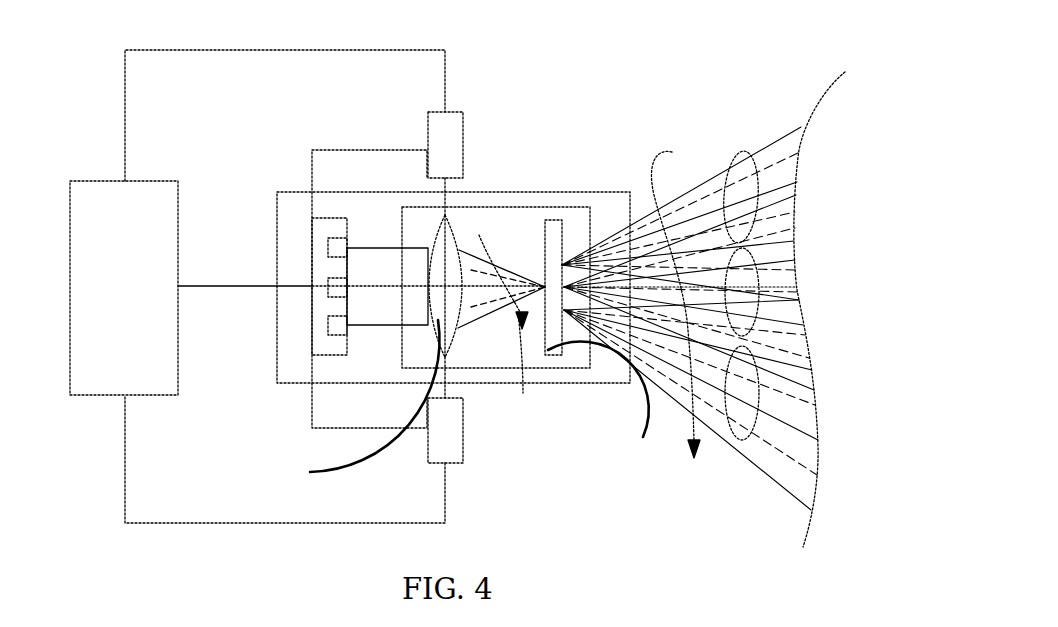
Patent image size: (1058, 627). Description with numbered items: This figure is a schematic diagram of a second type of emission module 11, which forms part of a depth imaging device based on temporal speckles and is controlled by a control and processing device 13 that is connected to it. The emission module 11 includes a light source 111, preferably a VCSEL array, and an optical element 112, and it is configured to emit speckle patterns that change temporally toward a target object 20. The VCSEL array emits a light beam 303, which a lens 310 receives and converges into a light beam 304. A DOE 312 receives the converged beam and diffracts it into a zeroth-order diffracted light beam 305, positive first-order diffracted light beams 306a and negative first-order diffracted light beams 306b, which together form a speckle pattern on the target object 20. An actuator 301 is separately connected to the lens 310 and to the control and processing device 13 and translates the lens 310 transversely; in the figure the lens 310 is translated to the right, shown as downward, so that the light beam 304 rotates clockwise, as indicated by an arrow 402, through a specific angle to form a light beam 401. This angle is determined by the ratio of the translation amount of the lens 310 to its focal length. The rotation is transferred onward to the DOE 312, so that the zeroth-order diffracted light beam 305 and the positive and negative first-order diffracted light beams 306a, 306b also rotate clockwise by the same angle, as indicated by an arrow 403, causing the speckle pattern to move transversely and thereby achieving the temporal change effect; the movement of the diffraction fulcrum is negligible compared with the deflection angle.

The control and processing device 13 is at (68, 286).
The target object 20 is at (817, 98).
The emission module 11 is at (590, 195).
The light source 111 is at (312, 245).
The optical element 112 is at (493, 207).
The actuator 301 is at (463, 145).
The light beam 303 is at (371, 248).
The light beam 304 is at (527, 369).
The zeroth-order diffracted light beam 305 is at (798, 284).
The positive first-order diffracted light beams 306a is at (742, 440).
The negative first-order diffracted light beams 306b is at (742, 152).
The lens 310 is at (338, 327).
The DOE 312 is at (605, 413).
The light beam 401 is at (494, 268).
The arrow 402 is at (520, 267).
The arrow 403 is at (683, 300).